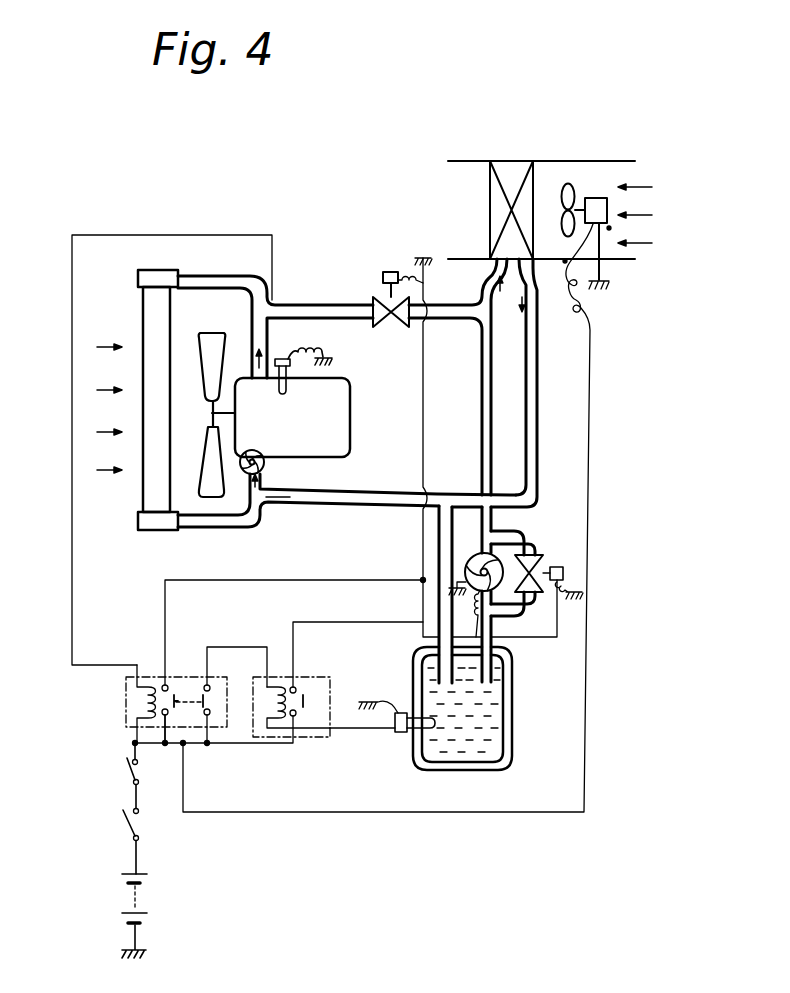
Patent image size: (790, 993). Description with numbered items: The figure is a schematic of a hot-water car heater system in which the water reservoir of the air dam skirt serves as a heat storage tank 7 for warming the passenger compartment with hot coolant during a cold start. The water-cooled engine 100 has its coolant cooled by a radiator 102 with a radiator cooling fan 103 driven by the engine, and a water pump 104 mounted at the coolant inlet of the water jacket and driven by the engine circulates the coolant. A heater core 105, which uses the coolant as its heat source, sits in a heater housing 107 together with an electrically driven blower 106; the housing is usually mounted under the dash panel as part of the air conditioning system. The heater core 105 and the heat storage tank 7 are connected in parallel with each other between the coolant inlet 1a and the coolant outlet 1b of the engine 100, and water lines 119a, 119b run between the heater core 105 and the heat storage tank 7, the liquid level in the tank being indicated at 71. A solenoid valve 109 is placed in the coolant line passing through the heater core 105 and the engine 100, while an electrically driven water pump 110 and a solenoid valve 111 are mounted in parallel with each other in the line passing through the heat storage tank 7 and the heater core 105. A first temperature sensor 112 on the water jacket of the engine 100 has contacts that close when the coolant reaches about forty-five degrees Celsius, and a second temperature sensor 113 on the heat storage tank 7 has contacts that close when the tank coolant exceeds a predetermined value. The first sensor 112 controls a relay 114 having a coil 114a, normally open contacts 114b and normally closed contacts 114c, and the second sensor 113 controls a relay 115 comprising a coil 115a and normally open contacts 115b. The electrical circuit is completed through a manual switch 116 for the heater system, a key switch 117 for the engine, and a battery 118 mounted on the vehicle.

The coolant inlet 1a is at (250, 489).
The coolant outlet 1b is at (252, 327).
The heat storage tank 7 is at (527, 713).
The heat storage medium 71 is at (492, 670).
The water-cooled engine 100 is at (313, 429).
The radiator 102 is at (143, 320).
The radiator cooling fan 103 is at (203, 333).
The water pump 104 is at (265, 466).
The heater core 105 is at (515, 163).
The blower 106 is at (573, 191).
The heater housing 107 is at (450, 160).
The solenoid valve 109 is at (388, 272).
The electrically driven water pump 110 is at (512, 555).
The solenoid valve 111 is at (563, 567).
The first temperature sensor 112 is at (290, 370).
The second temperature sensor 113 is at (408, 733).
The relay 114 is at (174, 670).
The coil 114a is at (147, 674).
The normally open contacts 114b is at (187, 690).
The normally closed contacts 114c is at (210, 688).
The relay 115 is at (303, 741).
The coil 115a is at (266, 731).
The normally open contacts 115b is at (305, 705).
The manual switch 116 is at (128, 772).
The key switch 117 is at (127, 824).
The battery 118 is at (144, 874).
The water line 119a is at (480, 422).
The water line 119b is at (538, 405).